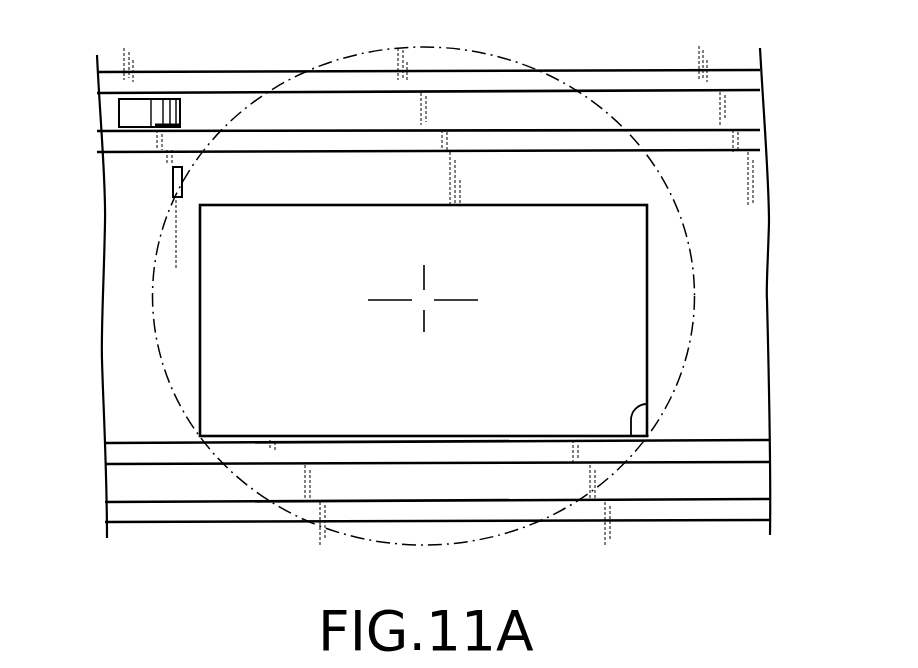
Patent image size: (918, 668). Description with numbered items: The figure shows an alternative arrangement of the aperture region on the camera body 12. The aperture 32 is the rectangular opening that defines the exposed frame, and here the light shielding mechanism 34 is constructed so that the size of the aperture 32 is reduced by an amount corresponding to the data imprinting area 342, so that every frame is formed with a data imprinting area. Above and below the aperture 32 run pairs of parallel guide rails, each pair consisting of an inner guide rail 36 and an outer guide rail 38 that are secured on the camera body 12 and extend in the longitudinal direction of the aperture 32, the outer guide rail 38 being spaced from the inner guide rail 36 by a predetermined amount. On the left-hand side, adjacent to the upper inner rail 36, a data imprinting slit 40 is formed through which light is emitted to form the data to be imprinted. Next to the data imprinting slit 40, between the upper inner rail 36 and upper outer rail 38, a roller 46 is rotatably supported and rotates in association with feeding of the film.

The camera body 12 is at (729, 300).
The aperture 32 is at (633, 442).
The light shielding mechanism 34 is at (521, 205).
The data imprinting area 342 is at (310, 187).
The inner guide rail 36 is at (597, 140).
The outer guide rail 38 is at (666, 78).
The data imprinting slit 40 is at (173, 183).
The roller 46 is at (133, 110).